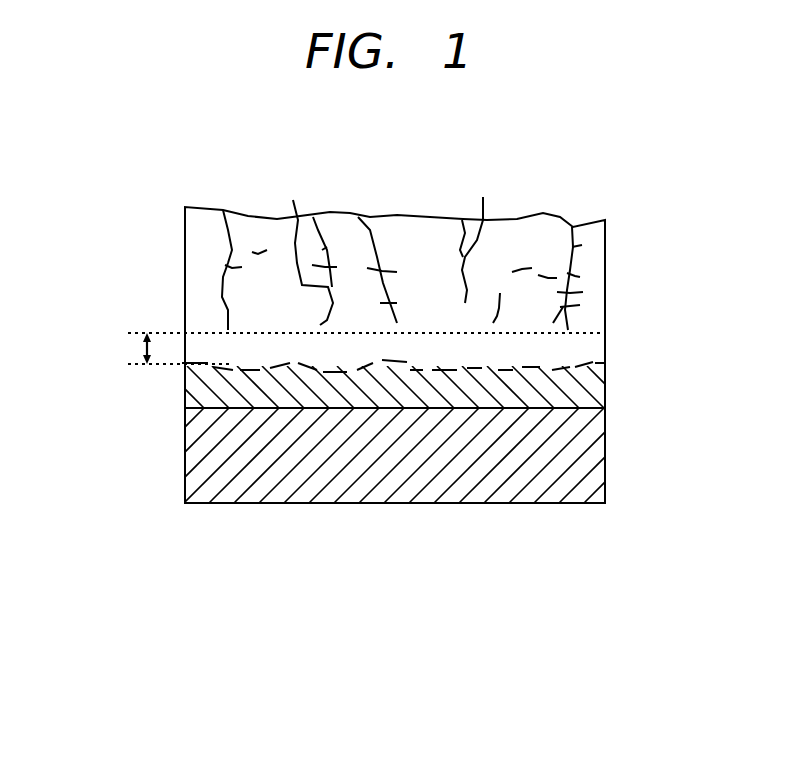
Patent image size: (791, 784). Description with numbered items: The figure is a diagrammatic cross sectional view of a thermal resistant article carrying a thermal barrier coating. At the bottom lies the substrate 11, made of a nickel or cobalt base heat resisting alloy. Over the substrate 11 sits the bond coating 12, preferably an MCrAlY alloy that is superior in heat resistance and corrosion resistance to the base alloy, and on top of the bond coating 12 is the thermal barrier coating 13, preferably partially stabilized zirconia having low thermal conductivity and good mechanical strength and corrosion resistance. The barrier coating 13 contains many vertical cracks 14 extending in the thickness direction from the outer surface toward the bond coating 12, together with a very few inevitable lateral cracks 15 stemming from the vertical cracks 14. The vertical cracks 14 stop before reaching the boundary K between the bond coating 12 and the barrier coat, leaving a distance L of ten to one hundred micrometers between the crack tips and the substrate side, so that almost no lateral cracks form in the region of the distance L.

The substrate 11 is at (595, 463).
The bond coating 12 is at (588, 395).
The thermal barrier coating 13 is at (593, 298).
The vertical cracks 14 is at (483, 197).
The lateral cracks 15 is at (293, 200).
The boundary K is at (590, 366).
The distance L is at (140, 347).